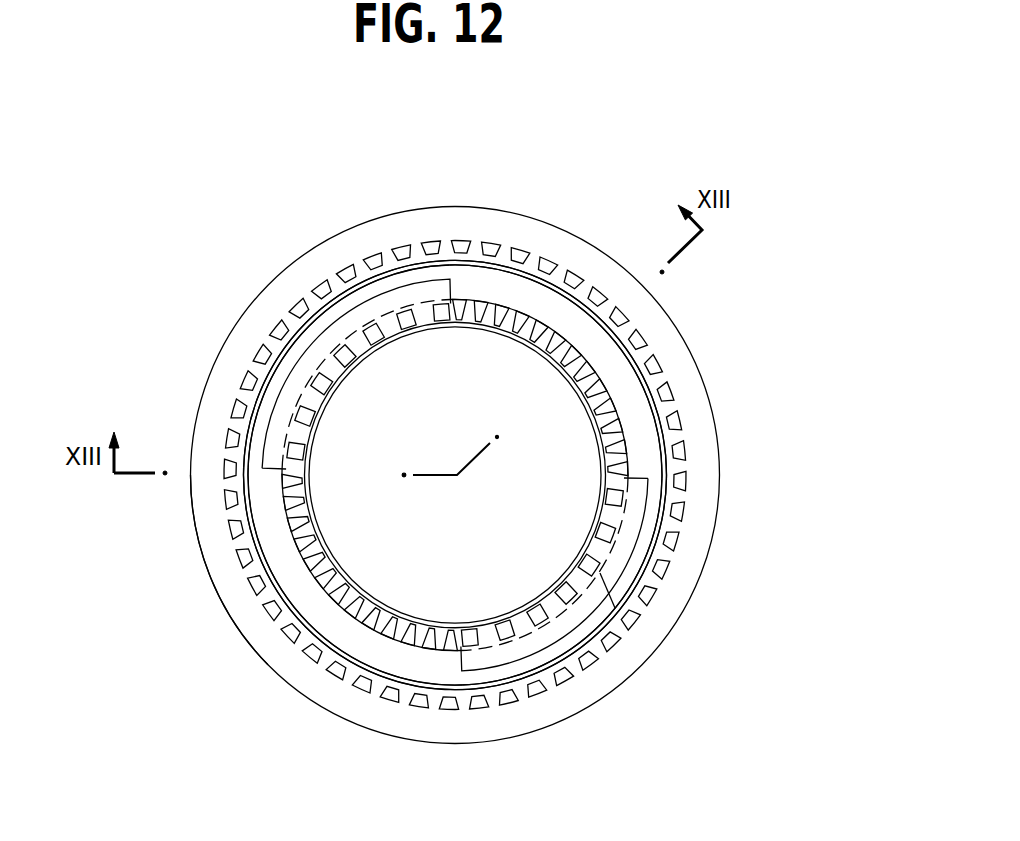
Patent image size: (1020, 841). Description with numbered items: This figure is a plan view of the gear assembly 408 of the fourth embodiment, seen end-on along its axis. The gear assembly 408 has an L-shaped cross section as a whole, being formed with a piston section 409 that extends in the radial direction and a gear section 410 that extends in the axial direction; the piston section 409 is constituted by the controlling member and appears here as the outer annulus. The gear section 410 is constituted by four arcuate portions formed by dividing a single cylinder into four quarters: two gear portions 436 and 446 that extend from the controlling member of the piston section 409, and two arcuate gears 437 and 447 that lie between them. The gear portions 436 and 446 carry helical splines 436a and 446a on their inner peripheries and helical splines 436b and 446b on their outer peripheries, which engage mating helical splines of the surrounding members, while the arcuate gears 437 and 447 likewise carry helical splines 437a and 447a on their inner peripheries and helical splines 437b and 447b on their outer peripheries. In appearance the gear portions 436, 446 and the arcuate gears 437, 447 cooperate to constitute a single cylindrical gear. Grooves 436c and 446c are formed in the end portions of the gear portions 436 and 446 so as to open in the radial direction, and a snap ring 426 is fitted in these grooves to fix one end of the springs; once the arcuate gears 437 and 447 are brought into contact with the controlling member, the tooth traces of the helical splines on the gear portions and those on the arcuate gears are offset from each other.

The gear assembly 408 is at (431, 203).
The piston section 409 is at (288, 691).
The gear section 410 is at (363, 710).
The snap ring 426 is at (645, 450).
The gear portion 436 is at (305, 302).
The helical splines 436a is at (330, 368).
The helical splines 436b is at (375, 257).
The groove 436c is at (278, 402).
The arcuate gear 437 is at (257, 558).
The helical splines 437a is at (305, 525).
The helical splines 437b is at (290, 618).
The gear portion 446 is at (615, 608).
The helical splines 446a is at (600, 553).
The helical splines 446b is at (609, 644).
The groove 446c is at (553, 645).
The arcuate gear 447 is at (650, 388).
The helical splines 447a is at (600, 382).
The helical splines 447b is at (544, 256).